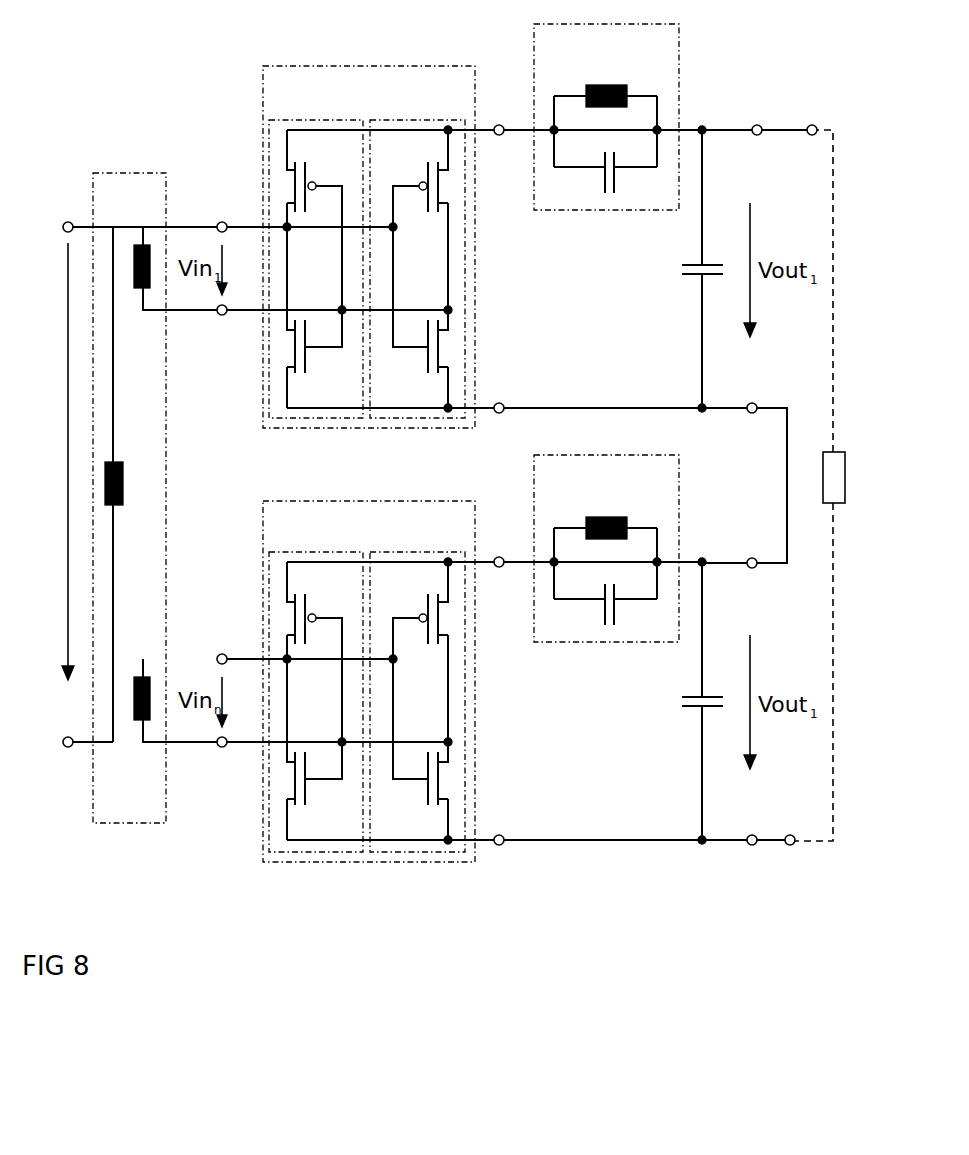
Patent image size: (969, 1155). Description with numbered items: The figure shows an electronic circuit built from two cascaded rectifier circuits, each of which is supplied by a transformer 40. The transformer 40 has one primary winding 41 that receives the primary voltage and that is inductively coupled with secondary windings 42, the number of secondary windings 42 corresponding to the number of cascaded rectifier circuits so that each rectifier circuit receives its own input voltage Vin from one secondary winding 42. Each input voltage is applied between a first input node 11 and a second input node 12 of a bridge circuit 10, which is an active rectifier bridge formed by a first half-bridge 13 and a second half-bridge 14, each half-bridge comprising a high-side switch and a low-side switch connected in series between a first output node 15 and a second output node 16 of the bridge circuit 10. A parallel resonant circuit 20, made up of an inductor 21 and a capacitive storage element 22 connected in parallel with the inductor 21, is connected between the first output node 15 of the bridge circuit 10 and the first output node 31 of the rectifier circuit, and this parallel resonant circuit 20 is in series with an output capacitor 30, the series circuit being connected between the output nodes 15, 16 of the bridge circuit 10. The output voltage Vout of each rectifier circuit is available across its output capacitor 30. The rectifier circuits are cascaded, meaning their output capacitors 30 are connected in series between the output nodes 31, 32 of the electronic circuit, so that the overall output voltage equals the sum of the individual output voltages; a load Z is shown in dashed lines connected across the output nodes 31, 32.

The bridge circuit 10 is at (495, 462).
The first input node 11 is at (296, 205).
The second input node 12 is at (324, 342).
The first half-bridge 13 is at (316, 251).
The second half-bridge 14 is at (417, 251).
The first output node 15 is at (509, 107).
The second output node 16 is at (509, 435).
The parallel resonant circuit 20 is at (636, 333).
The inductor 21 is at (605, 76).
The capacitive storage element 22 is at (597, 180).
The output capacitor 30 is at (660, 485).
The first output node 31 is at (783, 325).
The second output node 32 is at (760, 603).
The transformer 40 is at (207, 472).
The primary winding 41 is at (120, 462).
The secondary winding 42 is at (165, 504).
The load impedance Z is at (847, 478).